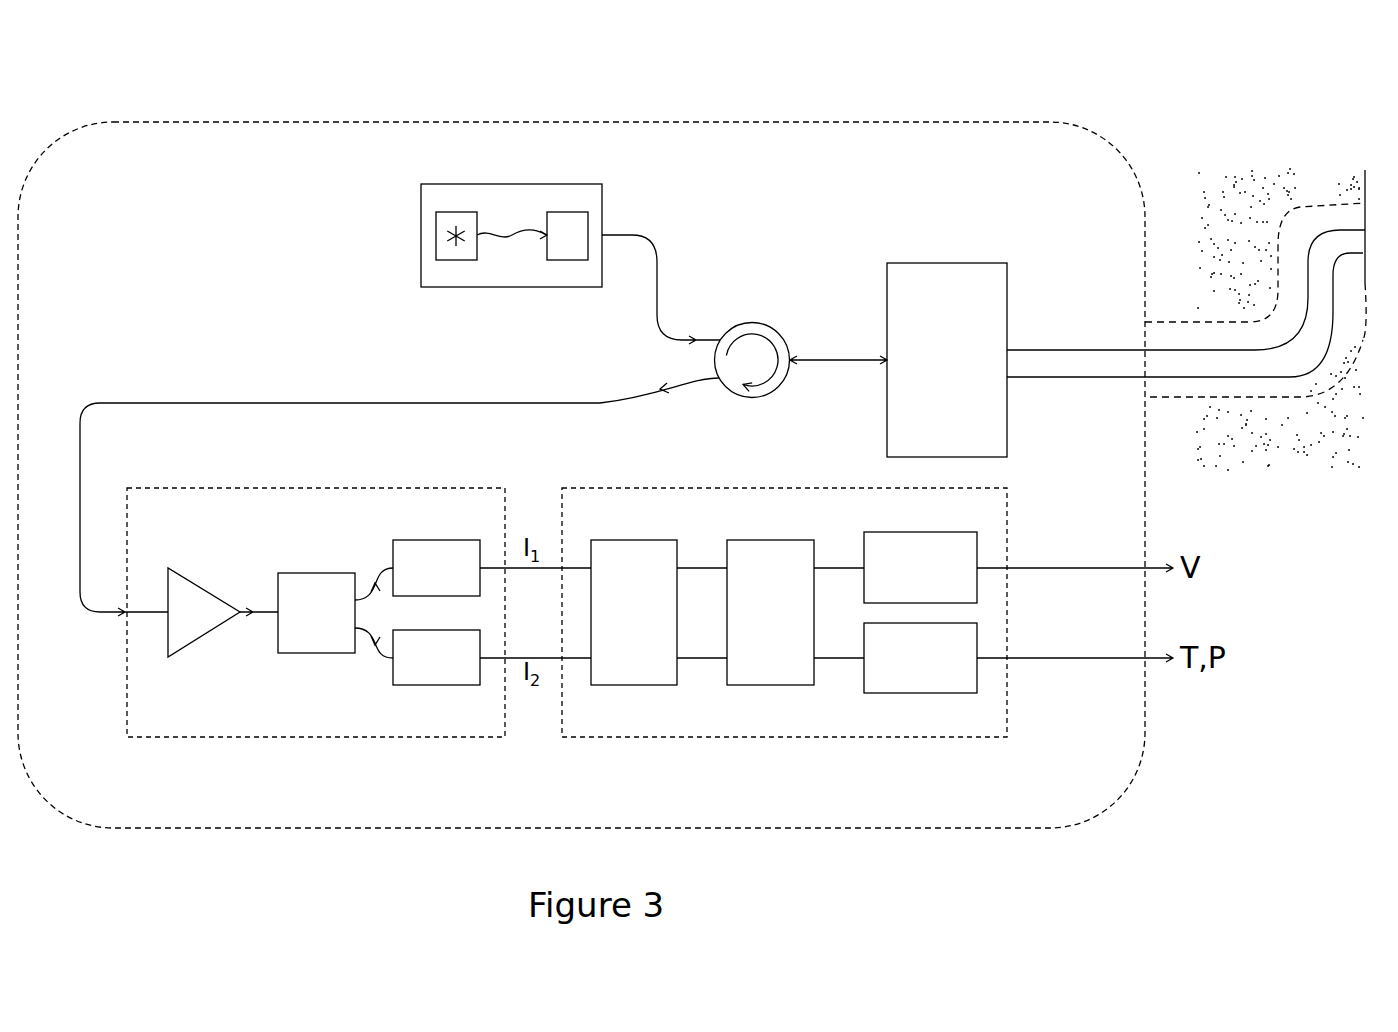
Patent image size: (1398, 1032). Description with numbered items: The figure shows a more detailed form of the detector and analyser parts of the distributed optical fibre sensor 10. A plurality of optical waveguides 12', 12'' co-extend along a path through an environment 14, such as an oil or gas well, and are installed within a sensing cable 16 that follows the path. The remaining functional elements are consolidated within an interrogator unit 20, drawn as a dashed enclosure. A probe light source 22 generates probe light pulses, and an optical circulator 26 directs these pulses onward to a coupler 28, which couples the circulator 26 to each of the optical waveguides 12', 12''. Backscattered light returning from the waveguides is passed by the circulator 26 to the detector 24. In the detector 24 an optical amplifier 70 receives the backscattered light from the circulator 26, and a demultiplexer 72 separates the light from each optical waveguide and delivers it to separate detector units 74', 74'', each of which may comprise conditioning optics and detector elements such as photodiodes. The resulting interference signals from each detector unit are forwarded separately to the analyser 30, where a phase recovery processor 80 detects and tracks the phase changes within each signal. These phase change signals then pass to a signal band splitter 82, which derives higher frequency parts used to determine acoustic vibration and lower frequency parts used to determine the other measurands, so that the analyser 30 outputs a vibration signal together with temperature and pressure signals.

The distributed optical fibre sensor 10 is at (1034, 93).
The optical waveguide 12' is at (1255, 223).
The optical waveguide 12'' is at (1272, 428).
The environment 14 is at (1315, 141).
The sensing cable 16 is at (1233, 316).
The interrogator unit 20 is at (715, 122).
The probe light source 22 is at (512, 183).
The detector 24 is at (316, 638).
The optical circulator 26 is at (774, 324).
The coupler 28 is at (947, 262).
The analyser 30 is at (784, 638).
The optical amplifier 70 is at (185, 652).
The demultiplexer 72 is at (315, 653).
The detector unit 74' is at (436, 543).
The detector unit 74'' is at (436, 683).
The phase recovery processor 80 is at (634, 687).
The signal band splitter 82 is at (770, 687).